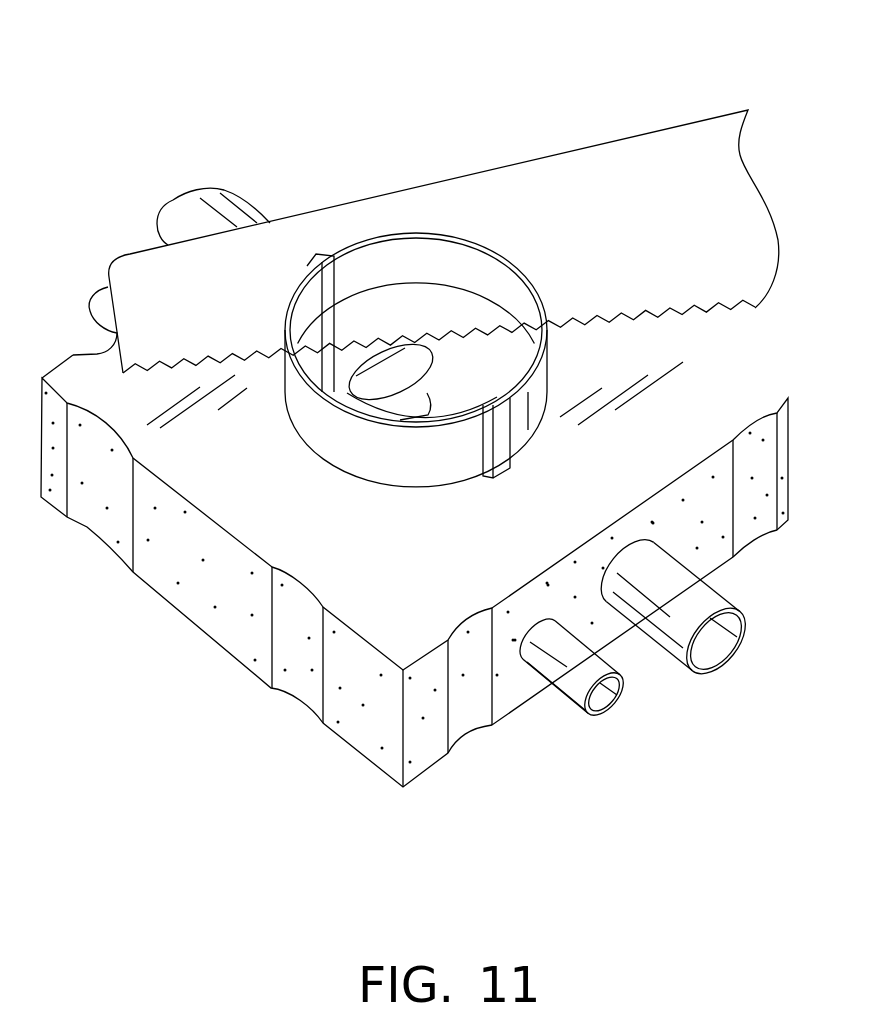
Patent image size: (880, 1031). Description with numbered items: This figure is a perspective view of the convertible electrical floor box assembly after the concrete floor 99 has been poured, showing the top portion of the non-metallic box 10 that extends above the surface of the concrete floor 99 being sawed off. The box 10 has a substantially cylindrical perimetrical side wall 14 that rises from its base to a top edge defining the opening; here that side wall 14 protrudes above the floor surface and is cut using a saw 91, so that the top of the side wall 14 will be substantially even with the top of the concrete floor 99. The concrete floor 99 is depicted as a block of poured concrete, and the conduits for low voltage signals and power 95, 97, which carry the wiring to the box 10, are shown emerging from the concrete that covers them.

The non-metallic floor box 10 is at (356, 456).
The perimetrical side wall 14 is at (323, 415).
The saw 91 is at (747, 165).
The conduit for low voltage signals 95 is at (572, 681).
The conduit for power 97 is at (712, 592).
The concrete floor 99 is at (740, 413).